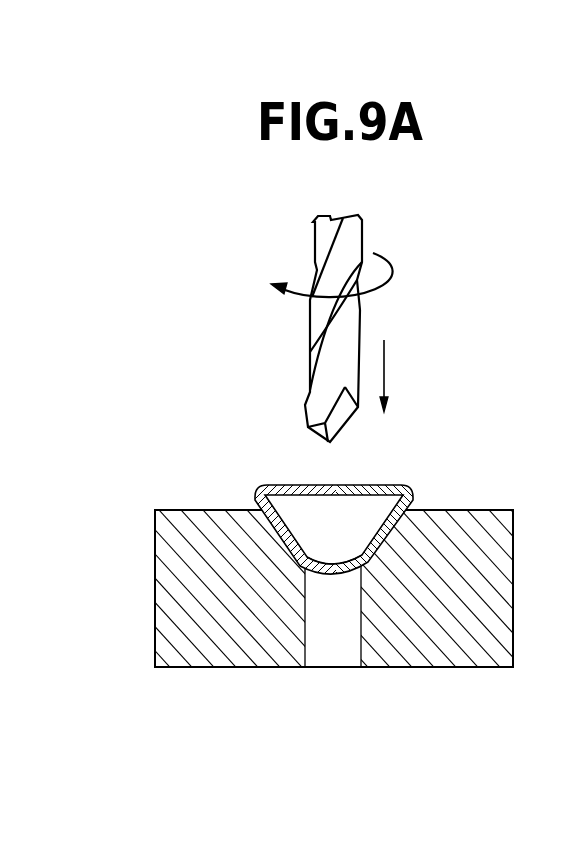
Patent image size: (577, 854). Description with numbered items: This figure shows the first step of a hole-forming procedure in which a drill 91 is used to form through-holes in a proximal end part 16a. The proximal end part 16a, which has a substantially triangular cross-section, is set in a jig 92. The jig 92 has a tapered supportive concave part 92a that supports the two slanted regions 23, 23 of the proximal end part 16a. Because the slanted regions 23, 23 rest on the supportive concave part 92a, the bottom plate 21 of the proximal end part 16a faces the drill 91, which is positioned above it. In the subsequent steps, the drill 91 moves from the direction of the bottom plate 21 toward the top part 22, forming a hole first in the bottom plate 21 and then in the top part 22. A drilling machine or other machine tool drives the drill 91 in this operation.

The drill 91 is at (313, 240).
The jig 92 is at (288, 631).
The tapered supportive concave part 92a is at (294, 538).
The proximal end part 16a is at (334, 571).
The bottom plate 21 is at (300, 484).
The top part 22 is at (328, 576).
The slanted regions 23 is at (280, 523).